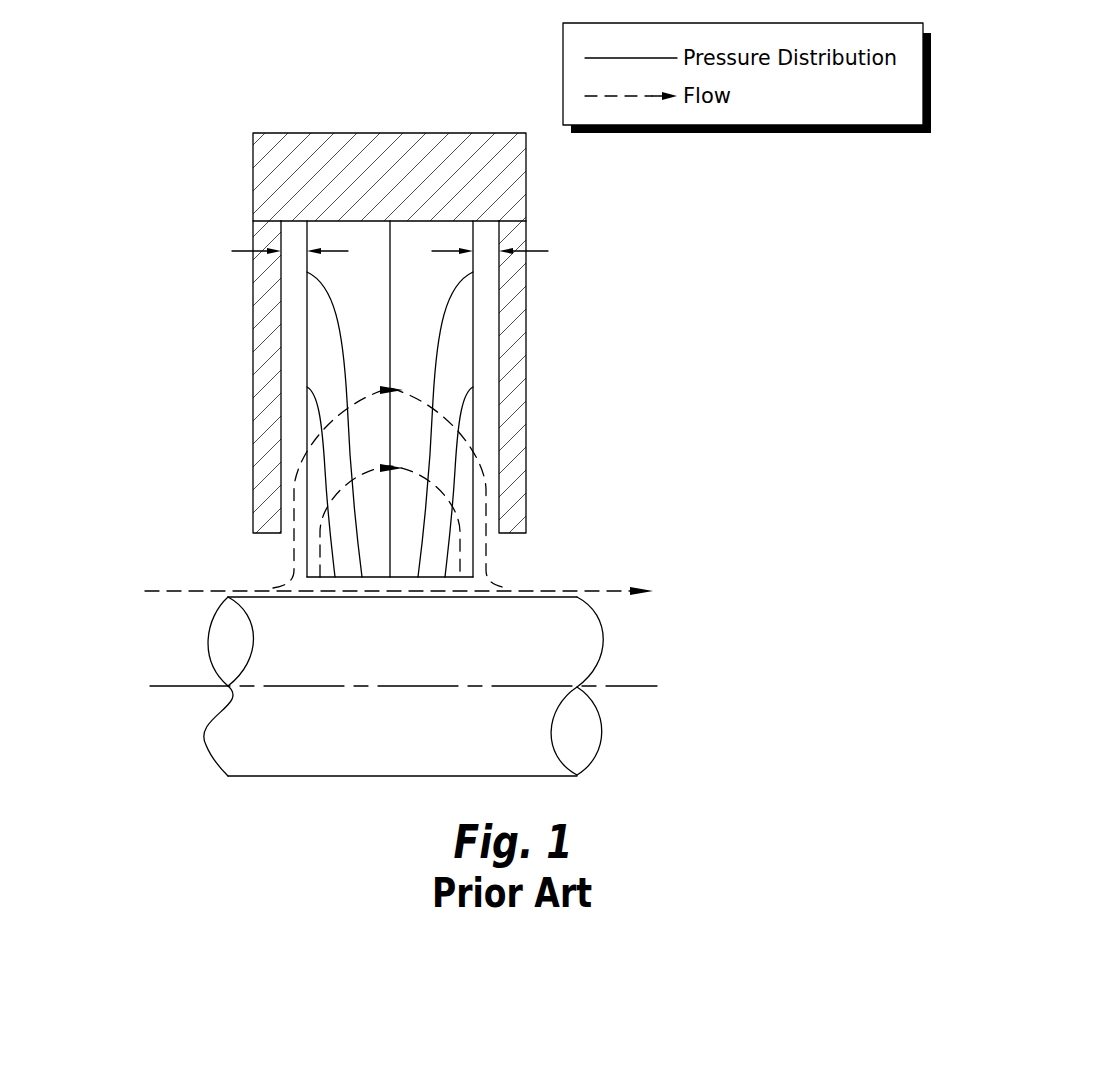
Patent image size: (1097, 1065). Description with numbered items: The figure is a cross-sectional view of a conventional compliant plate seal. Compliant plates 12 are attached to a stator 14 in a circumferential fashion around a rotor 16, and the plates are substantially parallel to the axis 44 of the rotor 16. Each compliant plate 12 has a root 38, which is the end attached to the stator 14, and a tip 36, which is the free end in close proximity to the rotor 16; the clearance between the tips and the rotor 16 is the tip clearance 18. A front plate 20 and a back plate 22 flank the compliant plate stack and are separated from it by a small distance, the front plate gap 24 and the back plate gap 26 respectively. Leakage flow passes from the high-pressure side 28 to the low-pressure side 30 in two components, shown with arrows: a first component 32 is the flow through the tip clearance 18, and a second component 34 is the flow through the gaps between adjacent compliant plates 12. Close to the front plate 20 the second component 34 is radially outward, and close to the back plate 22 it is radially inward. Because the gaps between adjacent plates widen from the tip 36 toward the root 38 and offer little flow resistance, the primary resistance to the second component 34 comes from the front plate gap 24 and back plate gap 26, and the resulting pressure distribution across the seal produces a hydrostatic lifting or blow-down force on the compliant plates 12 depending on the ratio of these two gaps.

The compliant plates 12 is at (440, 237).
The stator 14 is at (427, 144).
The rotor 16 is at (225, 740).
The tip clearance 18 is at (302, 582).
The front plate 20 is at (262, 311).
The back plate 22 is at (513, 368).
The front plate gap 24 is at (274, 252).
The back plate gap 26 is at (504, 254).
The high-pressure side 28 is at (258, 551).
The low-pressure side 30 is at (522, 553).
The first component of leakage flow 32 is at (597, 591).
The second component of leakage flow 34 is at (342, 407).
The tip 36 is at (403, 577).
The root 38 is at (347, 221).
The axis 44 is at (170, 686).